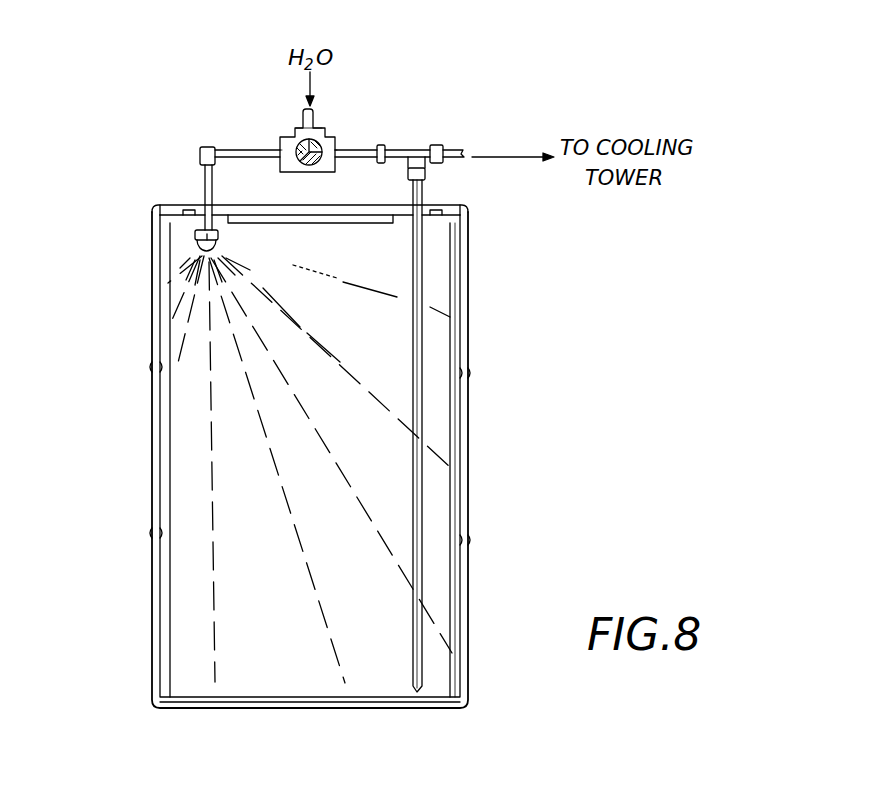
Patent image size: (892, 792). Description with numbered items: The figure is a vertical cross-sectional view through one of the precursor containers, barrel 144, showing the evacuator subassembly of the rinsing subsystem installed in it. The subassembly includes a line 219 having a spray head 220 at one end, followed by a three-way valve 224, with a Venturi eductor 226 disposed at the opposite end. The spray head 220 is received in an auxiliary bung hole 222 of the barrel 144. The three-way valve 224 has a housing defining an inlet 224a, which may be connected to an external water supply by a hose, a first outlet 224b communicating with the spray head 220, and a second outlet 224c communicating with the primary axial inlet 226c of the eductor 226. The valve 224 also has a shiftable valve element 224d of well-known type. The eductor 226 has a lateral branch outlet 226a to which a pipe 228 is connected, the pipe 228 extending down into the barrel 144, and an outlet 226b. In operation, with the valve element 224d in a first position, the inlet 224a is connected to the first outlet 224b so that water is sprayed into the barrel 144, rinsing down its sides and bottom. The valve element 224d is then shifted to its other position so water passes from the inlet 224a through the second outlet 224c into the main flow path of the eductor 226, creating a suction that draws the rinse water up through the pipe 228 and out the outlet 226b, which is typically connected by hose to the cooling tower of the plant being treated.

The barrel 144 is at (465, 443).
The line 219 is at (247, 150).
The spray head 220 is at (193, 243).
The auxiliary bung hole 222 is at (200, 207).
The three-way valve 224 is at (312, 178).
The inlet 224a is at (303, 120).
The first outlet 224b is at (281, 148).
The second outlet 224c is at (340, 148).
The shiftable valve element 224d is at (290, 159).
The Venturi eductor 226 is at (415, 150).
The lateral branch outlet 226a is at (425, 173).
The outlet 226b is at (440, 145).
The primary axial inlet 226c is at (381, 145).
The pipe 228 is at (422, 336).